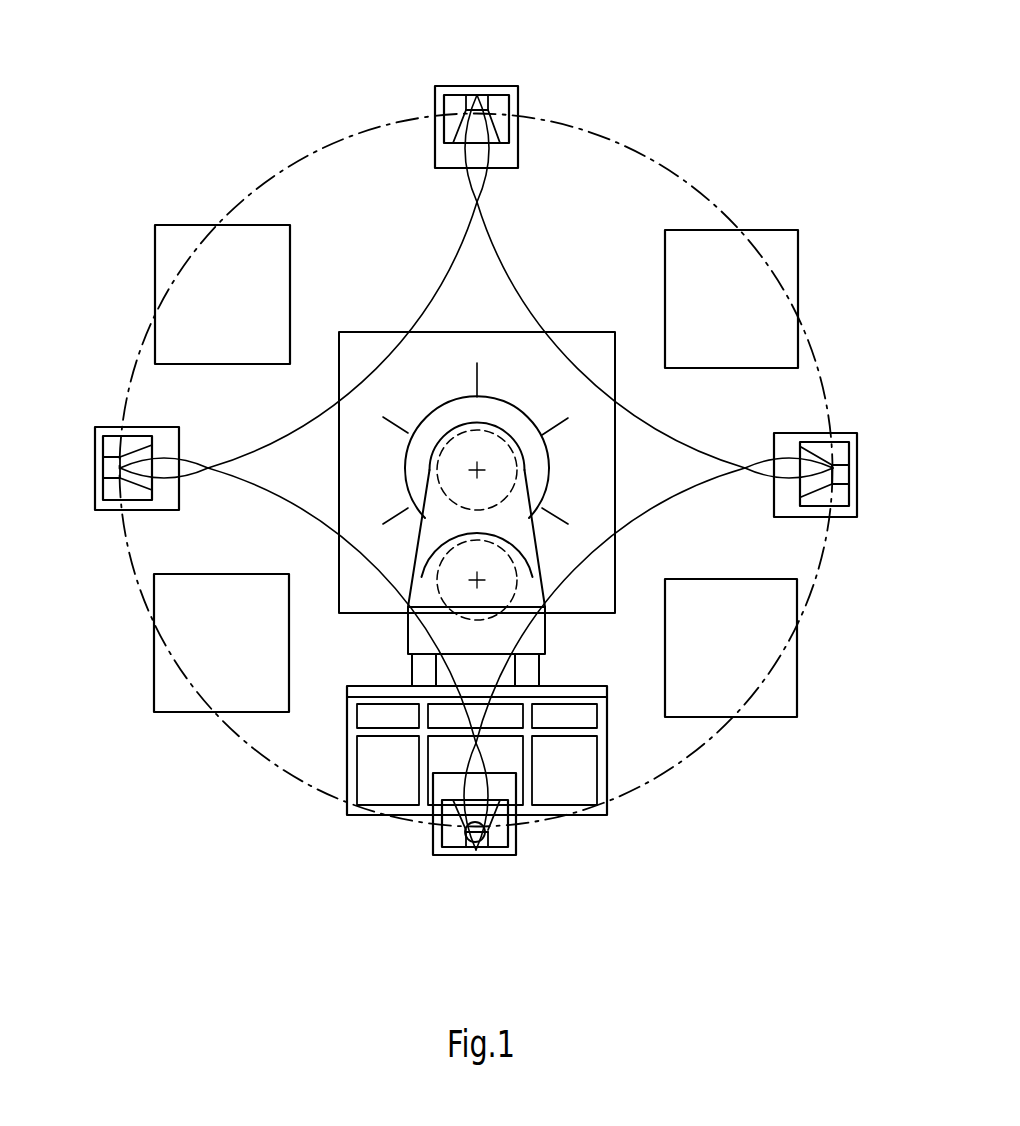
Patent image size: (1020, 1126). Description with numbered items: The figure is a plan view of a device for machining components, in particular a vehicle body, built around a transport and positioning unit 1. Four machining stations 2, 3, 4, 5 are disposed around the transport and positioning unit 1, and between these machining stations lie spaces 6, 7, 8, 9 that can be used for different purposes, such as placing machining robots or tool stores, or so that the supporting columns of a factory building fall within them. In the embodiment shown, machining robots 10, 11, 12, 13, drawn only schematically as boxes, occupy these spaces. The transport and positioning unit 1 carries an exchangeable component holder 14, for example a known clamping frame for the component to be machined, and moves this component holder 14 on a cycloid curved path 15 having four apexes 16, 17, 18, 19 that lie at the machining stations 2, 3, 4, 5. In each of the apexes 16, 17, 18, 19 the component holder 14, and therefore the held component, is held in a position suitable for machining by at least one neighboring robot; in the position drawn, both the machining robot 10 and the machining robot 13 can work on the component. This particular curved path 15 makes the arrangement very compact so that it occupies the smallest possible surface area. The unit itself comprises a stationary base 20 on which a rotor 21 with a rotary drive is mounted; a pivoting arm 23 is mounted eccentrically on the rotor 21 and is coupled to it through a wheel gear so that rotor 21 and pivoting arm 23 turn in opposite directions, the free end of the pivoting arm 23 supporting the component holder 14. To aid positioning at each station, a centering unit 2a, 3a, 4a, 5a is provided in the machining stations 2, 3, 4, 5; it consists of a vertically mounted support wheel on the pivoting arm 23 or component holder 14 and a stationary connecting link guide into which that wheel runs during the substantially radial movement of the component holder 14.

The transport and positioning unit 1 is at (626, 747).
The machining station 2 is at (477, 856).
The centering unit / connecting link guide 2a is at (450, 838).
The machining station 3 is at (112, 476).
The centering unit / connecting link guide 3a is at (112, 488).
The machining station 4 is at (503, 85).
The centering unit / connecting link guide 4a is at (452, 102).
The machining station 5 is at (843, 458).
The centering unit / connecting link guide 5a is at (842, 452).
The space 6 is at (318, 674).
The space 7 is at (326, 296).
The space 8 is at (586, 296).
The space 9 is at (623, 674).
The machining robot 10 is at (207, 657).
The machining robot 11 is at (208, 307).
The machining robot 12 is at (717, 312).
The machining robot 13 is at (715, 662).
The component holder 14 is at (353, 758).
The cycloid curved path 15 is at (302, 515).
The apex 16 is at (472, 848).
The apex 17 is at (120, 465).
The apex 18 is at (480, 110).
The apex 19 is at (832, 477).
The stationary base 20 is at (507, 417).
The rotor 21 is at (508, 513).
The pivoting arm 23 is at (510, 633).